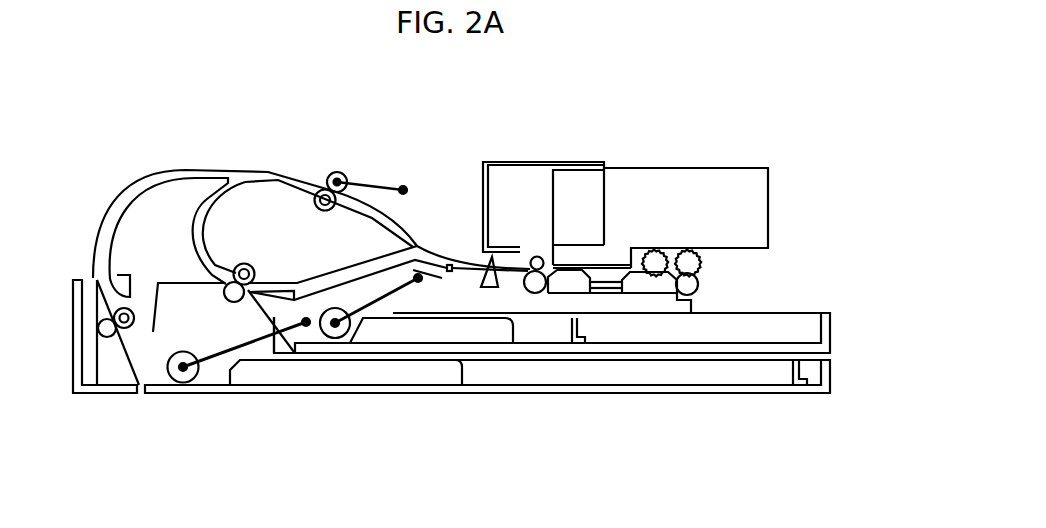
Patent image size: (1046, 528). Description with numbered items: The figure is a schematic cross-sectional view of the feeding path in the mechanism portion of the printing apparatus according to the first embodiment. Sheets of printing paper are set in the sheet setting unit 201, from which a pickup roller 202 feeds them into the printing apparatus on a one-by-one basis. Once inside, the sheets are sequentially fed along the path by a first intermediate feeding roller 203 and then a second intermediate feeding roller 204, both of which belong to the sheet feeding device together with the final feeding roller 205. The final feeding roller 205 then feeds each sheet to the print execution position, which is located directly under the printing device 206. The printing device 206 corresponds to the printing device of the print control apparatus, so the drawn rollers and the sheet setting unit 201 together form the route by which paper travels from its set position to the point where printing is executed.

The sheet setting unit 201 is at (633, 366).
The pickup roller 202 is at (193, 375).
The first intermediate feeding roller 203 is at (132, 324).
The second intermediate feeding roller 204 is at (337, 172).
The final feeding roller 205 is at (535, 283).
The printing device 206 is at (515, 218).